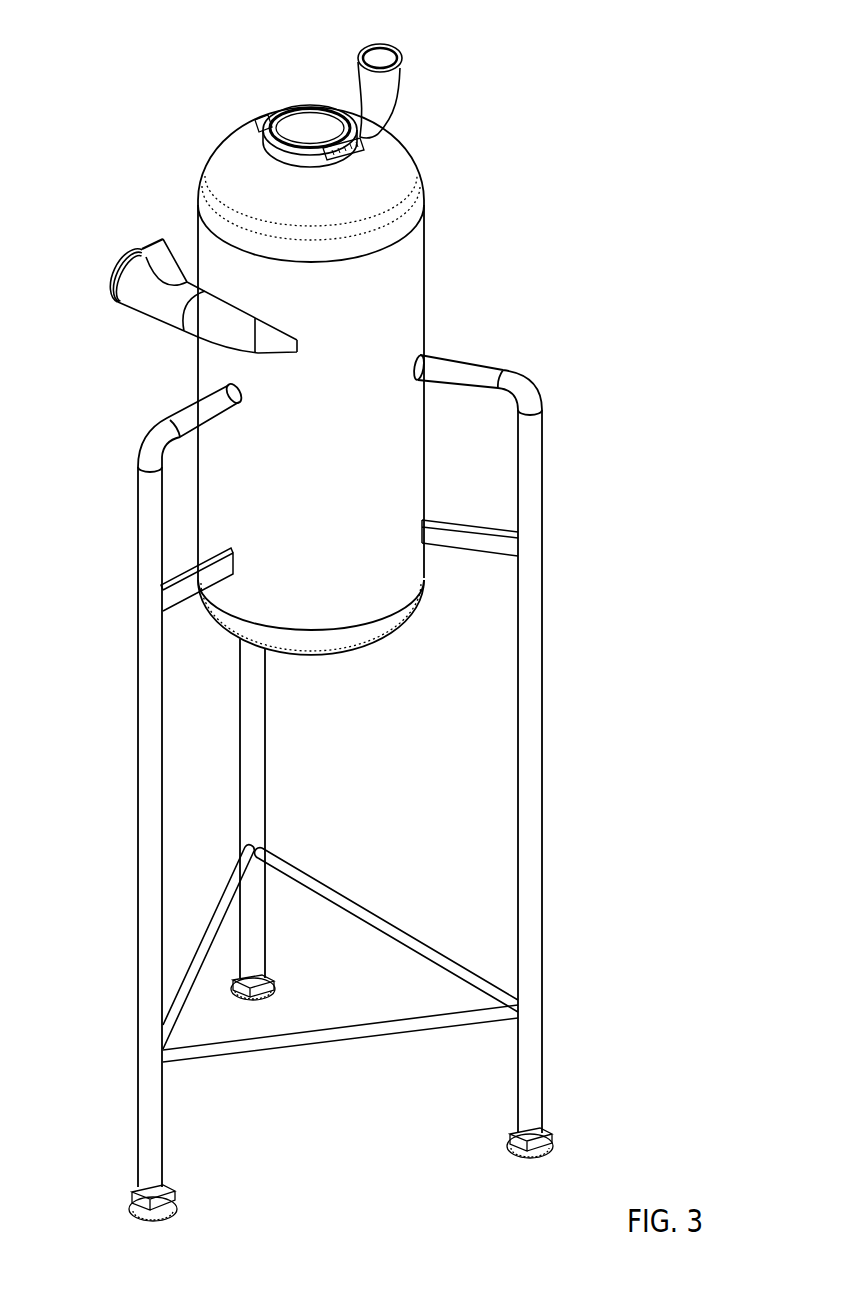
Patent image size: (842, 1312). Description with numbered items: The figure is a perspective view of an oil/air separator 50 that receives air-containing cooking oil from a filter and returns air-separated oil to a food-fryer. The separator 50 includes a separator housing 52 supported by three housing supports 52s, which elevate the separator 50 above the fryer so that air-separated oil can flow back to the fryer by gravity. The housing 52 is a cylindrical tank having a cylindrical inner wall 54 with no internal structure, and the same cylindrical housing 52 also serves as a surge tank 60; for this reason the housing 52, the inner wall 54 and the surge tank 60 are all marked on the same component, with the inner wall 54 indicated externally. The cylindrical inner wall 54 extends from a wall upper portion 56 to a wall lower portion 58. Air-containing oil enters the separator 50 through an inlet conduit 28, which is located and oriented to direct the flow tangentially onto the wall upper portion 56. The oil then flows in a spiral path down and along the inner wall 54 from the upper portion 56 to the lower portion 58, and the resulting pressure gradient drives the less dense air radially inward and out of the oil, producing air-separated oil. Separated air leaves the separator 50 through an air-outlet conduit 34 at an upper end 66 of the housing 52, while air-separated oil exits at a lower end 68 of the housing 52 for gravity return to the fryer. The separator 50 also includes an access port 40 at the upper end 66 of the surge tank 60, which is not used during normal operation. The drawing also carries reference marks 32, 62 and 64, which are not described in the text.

The inlet conduit 28 is at (147, 298).
The inlet flange connection 32 is at (165, 260).
The air-outlet conduit 34 is at (383, 88).
The access port 40 is at (290, 124).
The separator 50 is at (572, 125).
The separator housing 52 is at (351, 408).
The housing supports 52s is at (153, 769).
The cylindrical inner wall 54 is at (351, 485).
The wall upper portion 56 is at (405, 268).
The wall lower portion 58 is at (405, 573).
The surge tank 60 is at (351, 556).
The upper head knuckle 62 is at (408, 212).
The lower head seam 64 is at (393, 588).
The upper end 66 is at (408, 197).
The lower end 68 is at (352, 648).